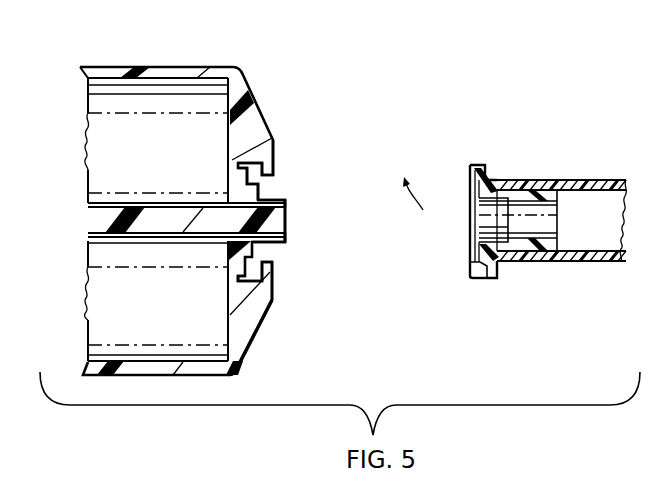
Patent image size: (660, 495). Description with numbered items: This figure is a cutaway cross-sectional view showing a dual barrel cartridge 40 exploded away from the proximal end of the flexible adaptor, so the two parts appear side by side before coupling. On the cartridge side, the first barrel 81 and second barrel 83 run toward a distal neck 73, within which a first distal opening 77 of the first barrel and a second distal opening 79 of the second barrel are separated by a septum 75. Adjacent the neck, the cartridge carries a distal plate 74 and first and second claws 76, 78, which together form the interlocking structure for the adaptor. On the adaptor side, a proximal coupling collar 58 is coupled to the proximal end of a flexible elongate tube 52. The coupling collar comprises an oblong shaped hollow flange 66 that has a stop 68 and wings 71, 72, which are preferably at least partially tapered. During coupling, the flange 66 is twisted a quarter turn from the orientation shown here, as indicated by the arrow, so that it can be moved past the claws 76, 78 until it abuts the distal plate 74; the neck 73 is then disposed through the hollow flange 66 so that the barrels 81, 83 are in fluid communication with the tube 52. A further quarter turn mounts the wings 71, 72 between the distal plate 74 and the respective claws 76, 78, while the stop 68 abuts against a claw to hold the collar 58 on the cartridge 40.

The dual barrel cartridge 40 is at (256, 57).
The first barrel 81 is at (166, 162).
The second barrel 83 is at (166, 310).
The septum 75 is at (283, 218).
The first claw 76 is at (273, 164).
The distal plate 74 is at (251, 180).
The first distal opening 77 is at (286, 201).
The second distal opening 79 is at (286, 233).
The distal neck 73 is at (292, 252).
The second claw 78 is at (274, 282).
The proximal coupling collar 58 is at (492, 157).
The wing 71 is at (471, 170).
The wing 72 is at (471, 265).
The oblong shaped hollow flange 66 is at (478, 279).
The stop 68 is at (490, 279).
The flexible elongate tube 52 is at (600, 262).